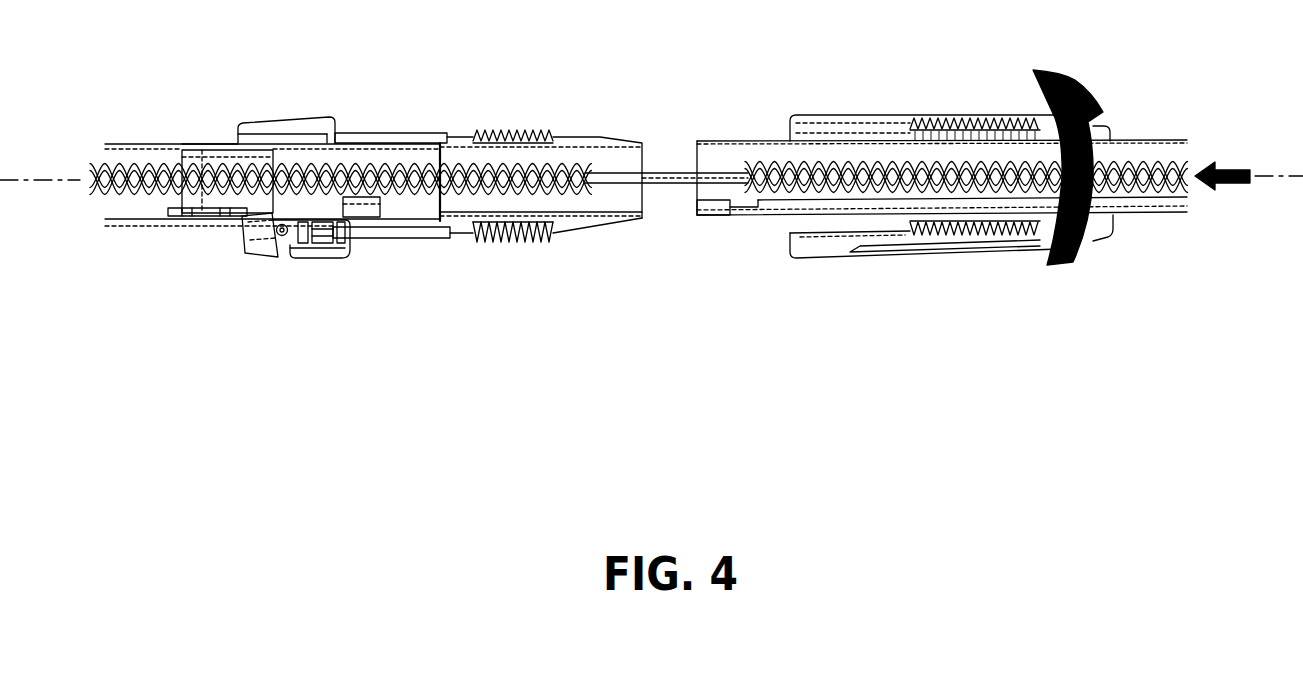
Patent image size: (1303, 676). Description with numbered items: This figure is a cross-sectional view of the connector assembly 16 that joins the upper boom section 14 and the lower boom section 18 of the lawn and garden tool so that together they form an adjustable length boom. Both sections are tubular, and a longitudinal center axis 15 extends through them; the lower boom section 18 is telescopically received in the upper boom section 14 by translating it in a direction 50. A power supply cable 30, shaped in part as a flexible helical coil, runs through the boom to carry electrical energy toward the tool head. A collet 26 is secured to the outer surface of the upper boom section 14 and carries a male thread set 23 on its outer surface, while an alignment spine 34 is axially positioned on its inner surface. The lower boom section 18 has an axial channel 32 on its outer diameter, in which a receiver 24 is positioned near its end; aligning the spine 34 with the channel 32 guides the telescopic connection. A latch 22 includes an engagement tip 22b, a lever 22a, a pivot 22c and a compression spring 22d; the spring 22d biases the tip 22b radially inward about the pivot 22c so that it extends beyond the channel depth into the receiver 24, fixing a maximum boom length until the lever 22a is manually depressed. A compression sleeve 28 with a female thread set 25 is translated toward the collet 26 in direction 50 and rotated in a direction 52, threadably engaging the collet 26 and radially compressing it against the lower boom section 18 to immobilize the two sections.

The first or upper boom section 14 is at (147, 162).
The longitudinal center axis 15 is at (1280, 168).
The connector assembly 16 is at (474, 381).
The second or lower boom section 18 is at (1133, 160).
The latch 22 is at (277, 245).
The lever 22a is at (322, 248).
The engagement tip 22b is at (257, 218).
The pivot 22c is at (283, 237).
The compression spring 22d is at (320, 233).
The male thread set 23 is at (510, 133).
The receiver 24 is at (740, 208).
The female thread set 25 is at (967, 130).
The collet 26 is at (604, 160).
The compression sleeve 28 is at (885, 130).
The power supply cable 30 is at (675, 177).
The channel 32 is at (770, 212).
The alignment spine 34 is at (458, 215).
The direction 50 is at (1235, 184).
The direction 52 is at (1060, 258).